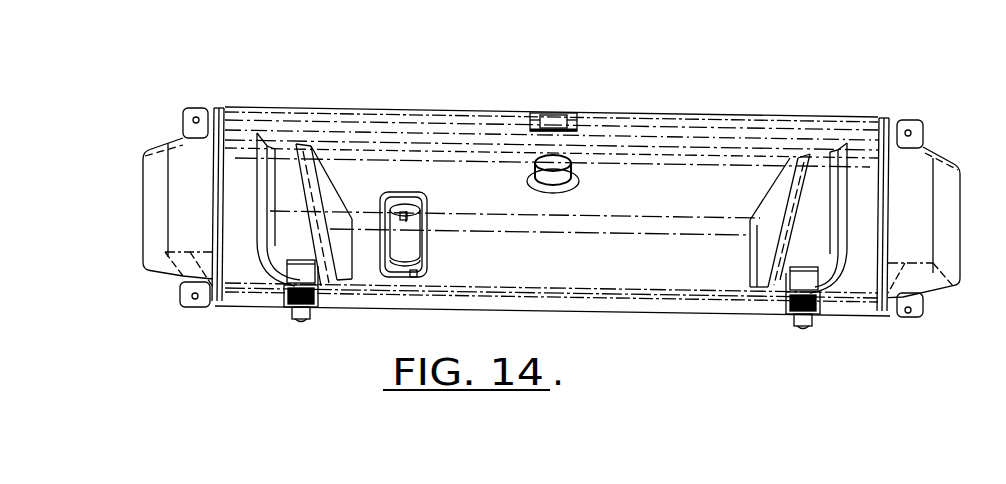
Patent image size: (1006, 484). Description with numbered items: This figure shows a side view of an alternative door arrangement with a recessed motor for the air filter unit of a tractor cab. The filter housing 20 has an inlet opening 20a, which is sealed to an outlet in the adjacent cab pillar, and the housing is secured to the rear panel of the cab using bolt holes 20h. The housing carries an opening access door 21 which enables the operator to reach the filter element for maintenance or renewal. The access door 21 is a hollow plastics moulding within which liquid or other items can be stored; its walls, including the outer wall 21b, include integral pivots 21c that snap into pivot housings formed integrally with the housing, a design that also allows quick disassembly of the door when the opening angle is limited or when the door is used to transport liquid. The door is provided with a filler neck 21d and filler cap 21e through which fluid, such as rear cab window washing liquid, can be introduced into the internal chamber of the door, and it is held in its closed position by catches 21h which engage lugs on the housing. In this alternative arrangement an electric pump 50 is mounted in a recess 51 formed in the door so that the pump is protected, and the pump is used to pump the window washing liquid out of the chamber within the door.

The housing 20 is at (945, 248).
The inlet opening 20a is at (190, 251).
The bolt holes 20h is at (196, 123).
The access door 21 is at (466, 184).
The outer wall 21b is at (737, 188).
The integral pivots 21c is at (575, 115).
The filler neck 21d is at (565, 176).
The filler cap 21e is at (553, 122).
The catches 21h is at (304, 285).
The electric pump 50 is at (432, 238).
The recess 51 is at (404, 204).